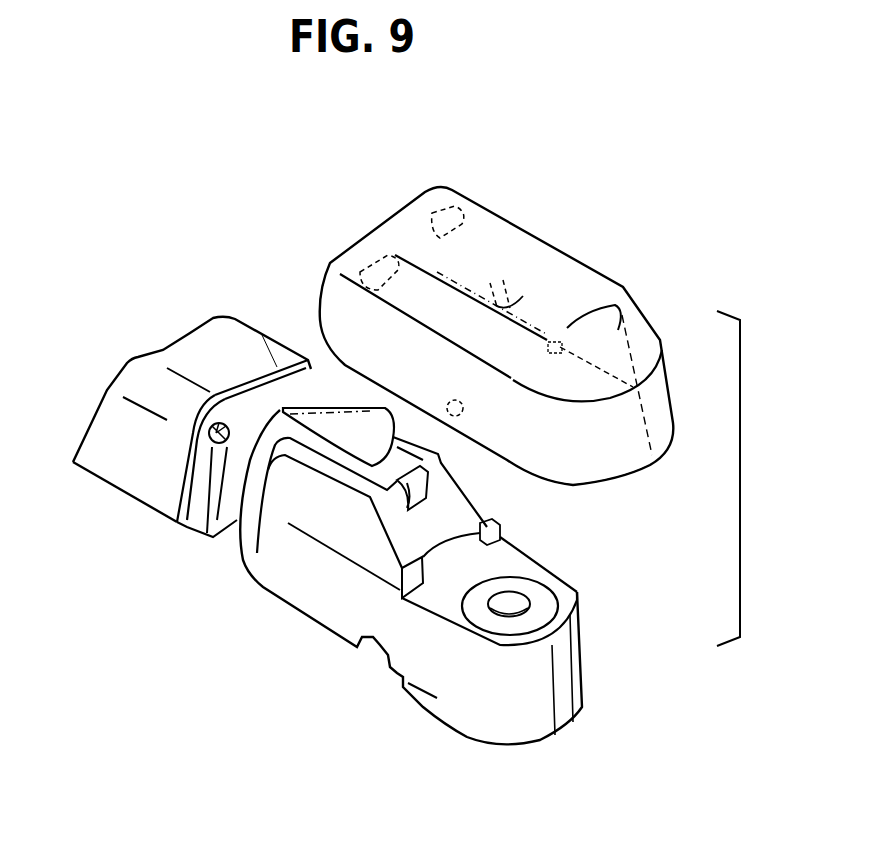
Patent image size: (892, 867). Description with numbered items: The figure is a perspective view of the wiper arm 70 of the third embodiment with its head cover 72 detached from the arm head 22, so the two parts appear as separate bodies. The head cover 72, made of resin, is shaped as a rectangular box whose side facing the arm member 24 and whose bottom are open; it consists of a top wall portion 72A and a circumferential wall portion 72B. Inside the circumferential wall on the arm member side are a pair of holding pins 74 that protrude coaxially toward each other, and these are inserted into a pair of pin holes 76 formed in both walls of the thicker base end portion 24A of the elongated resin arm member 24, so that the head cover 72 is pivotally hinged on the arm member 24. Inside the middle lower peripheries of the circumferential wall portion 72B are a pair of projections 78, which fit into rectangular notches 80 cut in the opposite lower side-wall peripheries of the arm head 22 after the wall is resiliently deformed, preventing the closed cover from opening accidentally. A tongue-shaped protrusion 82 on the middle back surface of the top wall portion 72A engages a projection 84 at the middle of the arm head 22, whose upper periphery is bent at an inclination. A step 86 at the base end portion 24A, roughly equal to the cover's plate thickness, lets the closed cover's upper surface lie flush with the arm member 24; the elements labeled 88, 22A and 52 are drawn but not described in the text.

The wiper arm 70 is at (300, 178).
The head cover 72 is at (541, 226).
The top wall portion 72A is at (487, 230).
The circumferential wall portion 72B is at (593, 460).
The holding pins 74 is at (373, 260).
The pin holes 76 is at (207, 532).
The projections 78 is at (556, 338).
The notches 80 is at (378, 645).
The protrusion 82 is at (523, 292).
The projection 84 is at (425, 482).
The step 86 is at (277, 365).
The top surface 88 is at (390, 220).
The arm head 22 is at (318, 628).
The mounting hole boss 22A is at (563, 592).
The arm member 24 is at (133, 503).
The base end portion 24A is at (320, 387).
The shaft 52 is at (402, 428).